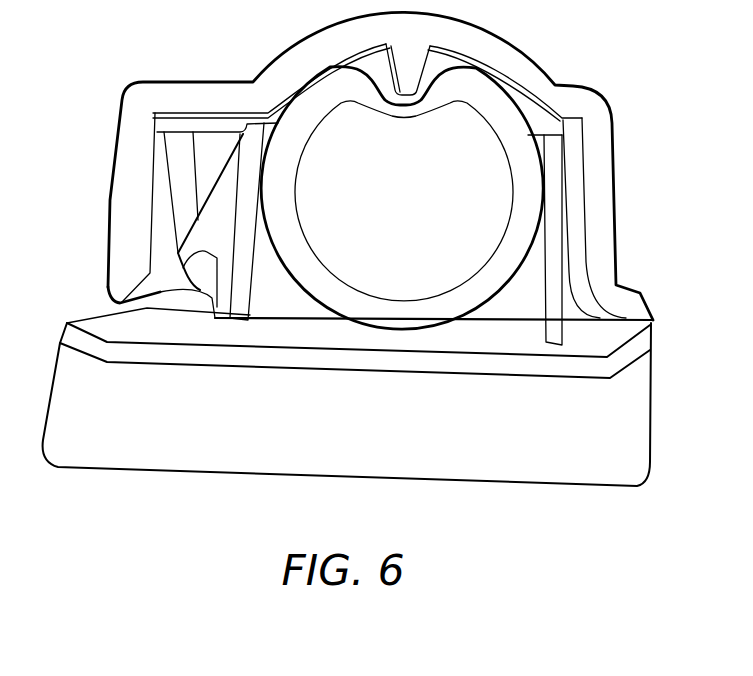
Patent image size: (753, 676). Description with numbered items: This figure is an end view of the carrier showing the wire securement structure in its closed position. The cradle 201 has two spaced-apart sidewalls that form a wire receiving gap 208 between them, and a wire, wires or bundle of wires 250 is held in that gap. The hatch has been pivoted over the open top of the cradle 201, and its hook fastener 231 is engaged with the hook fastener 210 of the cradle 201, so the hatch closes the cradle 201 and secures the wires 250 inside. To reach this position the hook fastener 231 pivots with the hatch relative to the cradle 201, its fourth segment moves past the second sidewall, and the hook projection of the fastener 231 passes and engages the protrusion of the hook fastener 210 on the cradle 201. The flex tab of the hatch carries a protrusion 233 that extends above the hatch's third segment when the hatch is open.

The cradle 201 is at (332, 337).
The hook fastener 231 is at (160, 275).
The hook fastener 210 is at (192, 252).
The wire receiving gap 208 is at (388, 235).
The protrusion 233 is at (408, 93).
The wires 250 is at (502, 268).